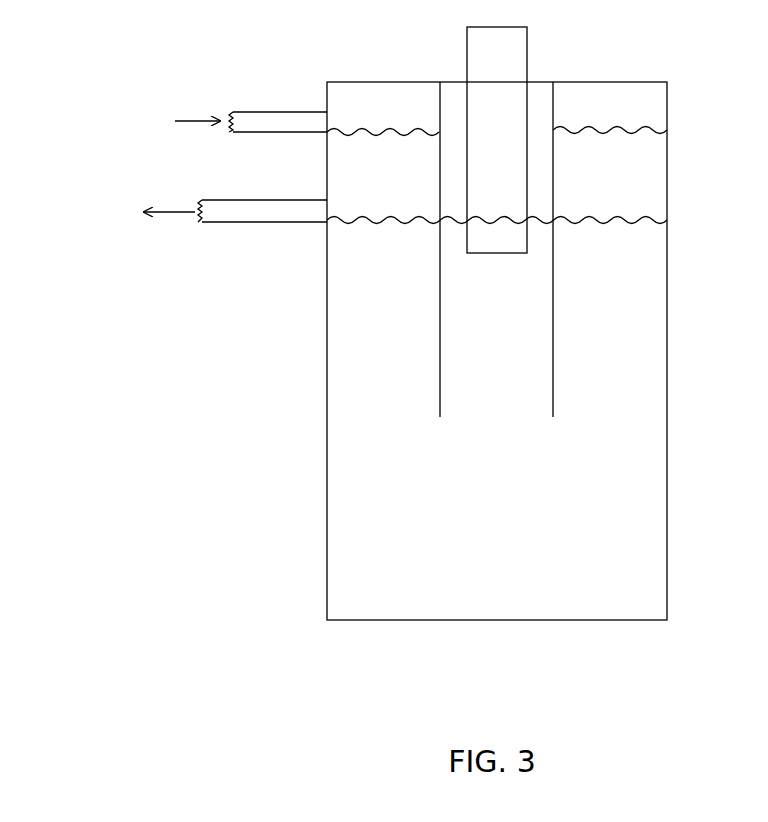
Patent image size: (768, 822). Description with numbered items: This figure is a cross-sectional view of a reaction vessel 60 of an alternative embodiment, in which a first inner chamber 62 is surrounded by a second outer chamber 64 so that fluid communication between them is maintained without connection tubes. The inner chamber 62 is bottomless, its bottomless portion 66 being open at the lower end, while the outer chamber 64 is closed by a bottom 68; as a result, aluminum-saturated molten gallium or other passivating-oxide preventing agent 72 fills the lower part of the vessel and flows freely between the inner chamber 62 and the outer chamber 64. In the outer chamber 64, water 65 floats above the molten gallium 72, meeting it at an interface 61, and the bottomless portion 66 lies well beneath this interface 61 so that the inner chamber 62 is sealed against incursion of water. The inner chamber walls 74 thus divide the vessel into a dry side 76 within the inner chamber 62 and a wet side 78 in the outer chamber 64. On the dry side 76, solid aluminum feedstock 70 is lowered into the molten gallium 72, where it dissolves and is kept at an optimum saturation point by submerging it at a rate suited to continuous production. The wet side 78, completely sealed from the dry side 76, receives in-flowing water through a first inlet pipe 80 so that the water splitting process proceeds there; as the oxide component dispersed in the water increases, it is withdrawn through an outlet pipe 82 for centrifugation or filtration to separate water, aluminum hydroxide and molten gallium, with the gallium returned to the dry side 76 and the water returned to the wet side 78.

The reaction vessel 60 is at (667, 253).
The interface 61 is at (360, 212).
The first inner chamber 62 is at (538, 82).
The second outer chamber 64 is at (349, 93).
The water 65 is at (361, 165).
The bottomless portion 66 is at (468, 412).
The bottom 68 is at (500, 620).
The solid aluminum feedstock 70 is at (479, 117).
The molten gallium or other passivating-oxide preventing agent 72 is at (490, 377).
The inner chamber walls 74 is at (553, 375).
The dry side 76 is at (479, 307).
The wet side 78 is at (361, 255).
The first inlet pipe 80 is at (262, 120).
The outlet pipe 82 is at (262, 212).